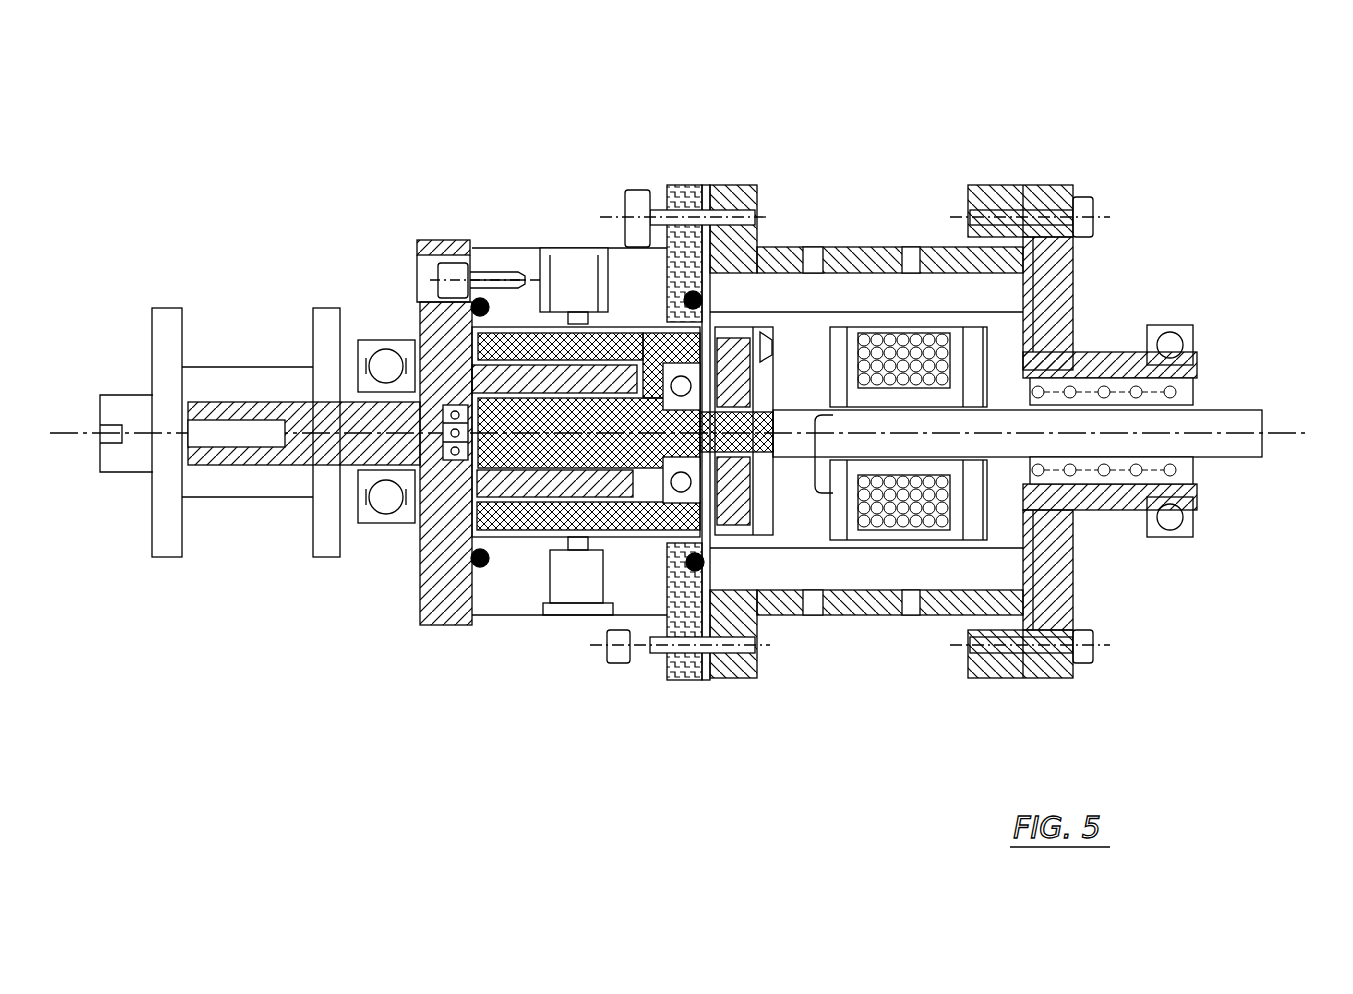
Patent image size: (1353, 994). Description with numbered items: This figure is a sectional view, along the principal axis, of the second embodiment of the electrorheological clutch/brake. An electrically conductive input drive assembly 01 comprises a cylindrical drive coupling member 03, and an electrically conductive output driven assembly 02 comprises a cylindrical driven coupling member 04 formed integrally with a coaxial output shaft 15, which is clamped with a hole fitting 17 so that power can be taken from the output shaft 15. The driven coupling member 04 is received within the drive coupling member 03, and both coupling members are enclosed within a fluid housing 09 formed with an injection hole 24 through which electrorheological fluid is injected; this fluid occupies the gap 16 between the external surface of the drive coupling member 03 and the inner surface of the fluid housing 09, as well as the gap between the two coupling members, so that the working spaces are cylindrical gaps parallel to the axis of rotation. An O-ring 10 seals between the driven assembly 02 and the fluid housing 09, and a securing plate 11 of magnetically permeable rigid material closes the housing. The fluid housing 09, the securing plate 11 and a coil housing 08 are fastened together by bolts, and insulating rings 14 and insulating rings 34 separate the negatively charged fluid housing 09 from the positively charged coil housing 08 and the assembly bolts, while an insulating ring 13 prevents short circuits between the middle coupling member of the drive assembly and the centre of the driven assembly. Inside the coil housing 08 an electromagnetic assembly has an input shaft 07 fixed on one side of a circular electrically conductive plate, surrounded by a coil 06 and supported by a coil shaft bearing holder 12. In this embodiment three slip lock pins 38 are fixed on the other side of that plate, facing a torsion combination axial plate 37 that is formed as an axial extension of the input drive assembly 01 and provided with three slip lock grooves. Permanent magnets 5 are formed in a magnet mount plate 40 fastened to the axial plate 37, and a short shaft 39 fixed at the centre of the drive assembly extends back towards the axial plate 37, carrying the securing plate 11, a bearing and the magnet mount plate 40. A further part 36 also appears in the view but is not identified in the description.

The input drive assembly 01 is at (633, 368).
The output driven assembly 02 is at (412, 323).
The drive coupling member 03 is at (570, 340).
The driven coupling member 04 is at (530, 485).
The permanent magnet 5 is at (758, 378).
The coil 06 is at (1051, 297).
The input shaft 07 is at (1223, 393).
The coil housing 08 is at (778, 606).
The fluid housing 09 is at (518, 580).
The O-ring 10 is at (688, 574).
The securing plate 11 is at (686, 492).
The coil shaft bearing holder 12 is at (1043, 185).
The insulating ring 13 is at (438, 463).
The insulating rings 14 is at (680, 247).
The output shaft 15 is at (298, 425).
The gap 16 is at (440, 240).
The hole fitting 17 is at (262, 503).
The injection hole 24 is at (573, 297).
The insulating rings 34 is at (622, 683).
The thin plate 36 is at (700, 370).
The torsion combination axial plate 37 is at (767, 490).
The slip lock pins 38 is at (823, 474).
The short shaft 39 is at (857, 380).
The magnet mount plate 40 is at (1002, 461).